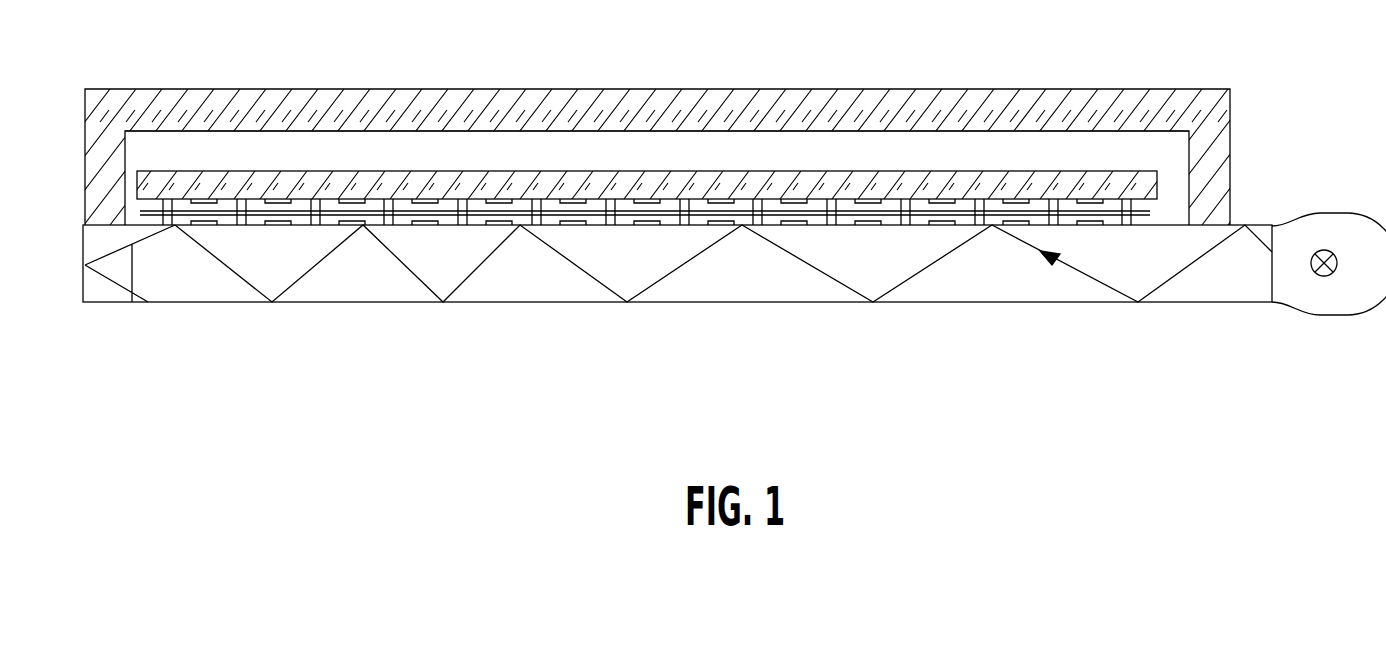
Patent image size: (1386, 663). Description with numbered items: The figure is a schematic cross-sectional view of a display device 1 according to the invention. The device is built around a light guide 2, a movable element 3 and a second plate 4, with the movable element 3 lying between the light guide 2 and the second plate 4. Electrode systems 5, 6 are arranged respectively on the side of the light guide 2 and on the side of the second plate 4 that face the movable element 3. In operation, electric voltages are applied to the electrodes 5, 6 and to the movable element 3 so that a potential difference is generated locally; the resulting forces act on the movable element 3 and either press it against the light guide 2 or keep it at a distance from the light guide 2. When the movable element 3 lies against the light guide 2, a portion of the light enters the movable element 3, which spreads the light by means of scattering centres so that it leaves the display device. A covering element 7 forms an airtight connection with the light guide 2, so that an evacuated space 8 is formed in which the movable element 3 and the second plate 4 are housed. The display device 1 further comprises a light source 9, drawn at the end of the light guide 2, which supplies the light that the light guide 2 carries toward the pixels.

The display device 1 is at (288, 390).
The light guide 2 is at (793, 288).
The movable element 3 is at (1068, 227).
The second plate 4 is at (503, 178).
The electrode system 5 is at (942, 227).
The electrode system 6 is at (1012, 197).
The covering element 7 is at (270, 107).
The evacuated space 8 is at (703, 148).
The light source 9 is at (1330, 213).